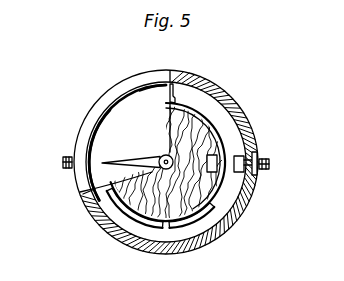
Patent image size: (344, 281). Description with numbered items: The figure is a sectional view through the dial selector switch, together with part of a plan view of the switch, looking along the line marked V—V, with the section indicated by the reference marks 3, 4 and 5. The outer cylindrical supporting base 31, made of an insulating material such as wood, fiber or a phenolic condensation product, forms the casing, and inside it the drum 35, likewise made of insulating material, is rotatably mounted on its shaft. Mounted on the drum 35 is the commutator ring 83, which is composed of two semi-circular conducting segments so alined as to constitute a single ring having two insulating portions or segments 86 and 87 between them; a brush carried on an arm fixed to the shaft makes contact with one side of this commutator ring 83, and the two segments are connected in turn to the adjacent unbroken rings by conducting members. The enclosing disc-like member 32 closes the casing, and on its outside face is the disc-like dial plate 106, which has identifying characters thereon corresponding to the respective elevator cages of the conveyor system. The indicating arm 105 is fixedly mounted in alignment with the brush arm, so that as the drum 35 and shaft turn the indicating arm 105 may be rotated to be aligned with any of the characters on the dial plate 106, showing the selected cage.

The pointer 3 is at (103, 163).
The ring segment portion 4 is at (100, 155).
The ring segment portion 5 is at (149, 96).
The outer cylindrical supporting base 31 is at (232, 98).
The enclosing disc-like member 32 is at (128, 82).
The drum 35 is at (209, 181).
The commutator ring 83 is at (209, 205).
The insulating portion 86 is at (178, 104).
The insulating portion 87 is at (167, 225).
The indicating arm 105 is at (80, 192).
The disc-like plate 106 is at (120, 117).